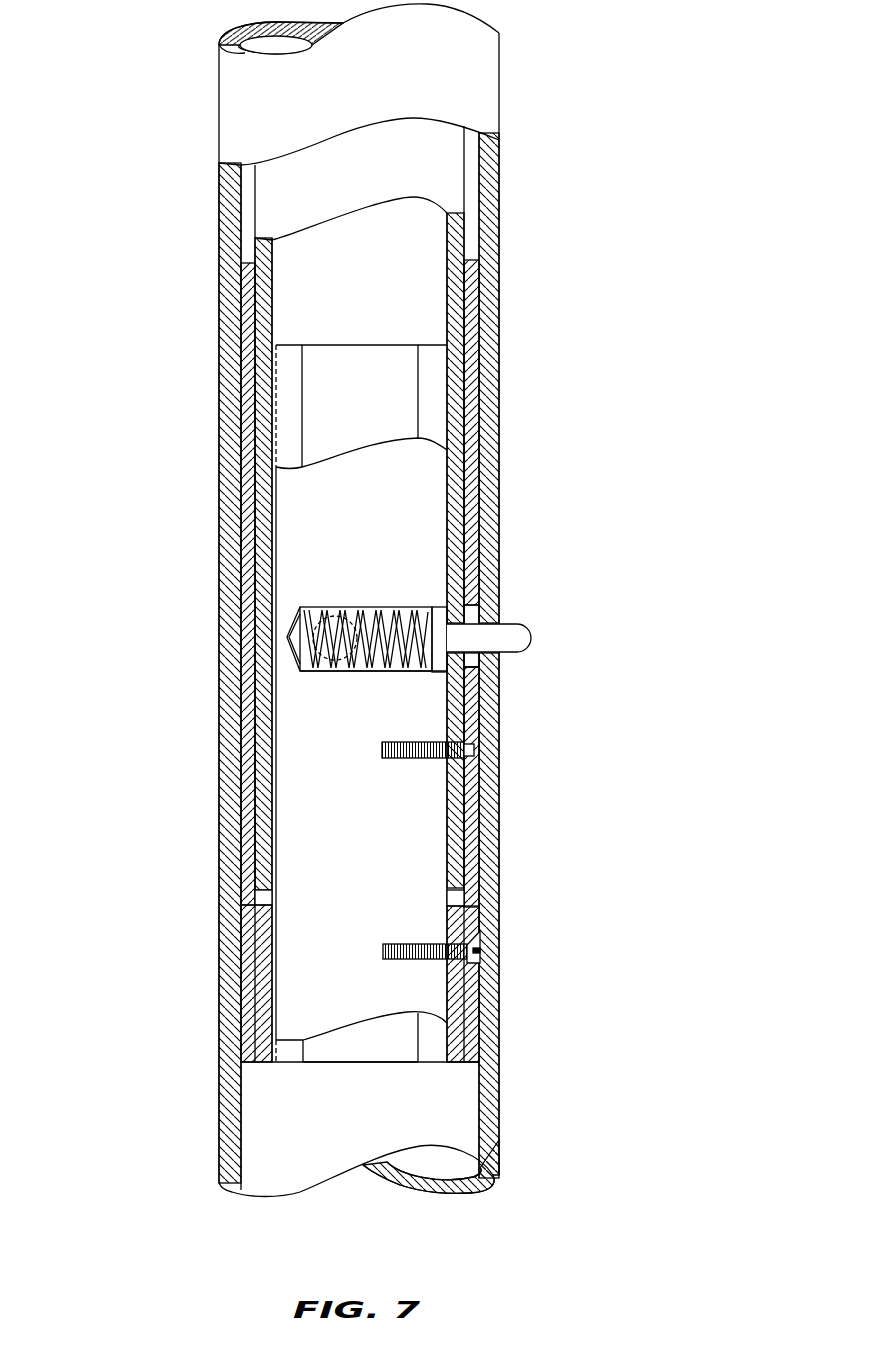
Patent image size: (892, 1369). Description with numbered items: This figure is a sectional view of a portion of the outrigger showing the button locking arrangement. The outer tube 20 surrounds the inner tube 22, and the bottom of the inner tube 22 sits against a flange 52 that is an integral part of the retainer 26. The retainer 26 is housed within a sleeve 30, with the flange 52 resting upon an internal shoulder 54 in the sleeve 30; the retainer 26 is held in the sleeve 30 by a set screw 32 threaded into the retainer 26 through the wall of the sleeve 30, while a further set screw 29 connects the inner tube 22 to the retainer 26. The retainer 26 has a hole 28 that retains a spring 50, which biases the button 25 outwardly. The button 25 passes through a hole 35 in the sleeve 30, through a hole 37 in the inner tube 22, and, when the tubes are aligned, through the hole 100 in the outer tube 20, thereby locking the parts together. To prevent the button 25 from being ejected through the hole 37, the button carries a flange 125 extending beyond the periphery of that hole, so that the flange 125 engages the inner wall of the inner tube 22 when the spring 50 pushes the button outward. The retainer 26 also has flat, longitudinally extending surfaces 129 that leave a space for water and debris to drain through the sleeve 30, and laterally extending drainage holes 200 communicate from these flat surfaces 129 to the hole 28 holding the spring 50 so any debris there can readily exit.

The outer tube 20 is at (500, 198).
The inner tube 22 is at (455, 305).
The button 25 is at (533, 636).
The retainer 26 is at (408, 839).
The hole 28 is at (397, 672).
The set screw 29 is at (468, 746).
The sleeve 30 is at (467, 1005).
The set screw 32 is at (479, 951).
The hole 35 is at (481, 621).
The hole 37 is at (466, 655).
The spring 50 is at (297, 640).
The flange 52 is at (461, 900).
The internal shoulder 54 is at (461, 908).
The hole 100 is at (483, 616).
The flange 125 is at (283, 616).
The flat surfaces 129 is at (377, 1042).
The drainage holes 200 is at (317, 671).